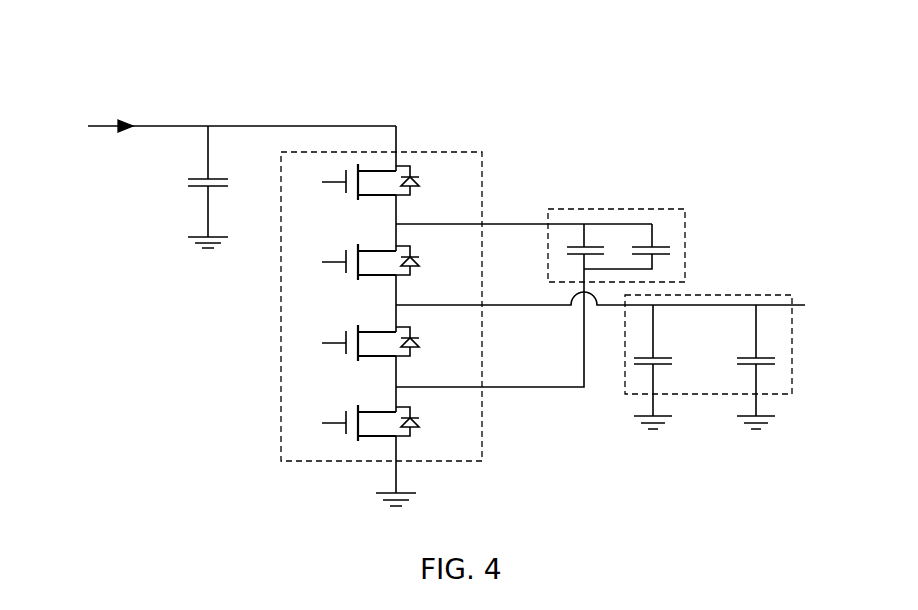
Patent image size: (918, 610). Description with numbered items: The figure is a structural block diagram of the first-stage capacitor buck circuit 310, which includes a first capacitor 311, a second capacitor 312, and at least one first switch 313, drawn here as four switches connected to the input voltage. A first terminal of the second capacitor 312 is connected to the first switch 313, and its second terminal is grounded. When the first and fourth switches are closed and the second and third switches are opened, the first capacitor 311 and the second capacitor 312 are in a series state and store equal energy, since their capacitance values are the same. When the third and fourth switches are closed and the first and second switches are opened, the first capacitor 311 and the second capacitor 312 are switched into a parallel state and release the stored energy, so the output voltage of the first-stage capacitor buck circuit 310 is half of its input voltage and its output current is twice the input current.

The first-stage capacitor buck circuit 310 is at (241, 68).
The first capacitor 311 is at (684, 232).
The second capacitor 312 is at (711, 297).
The first switch 313 is at (455, 153).